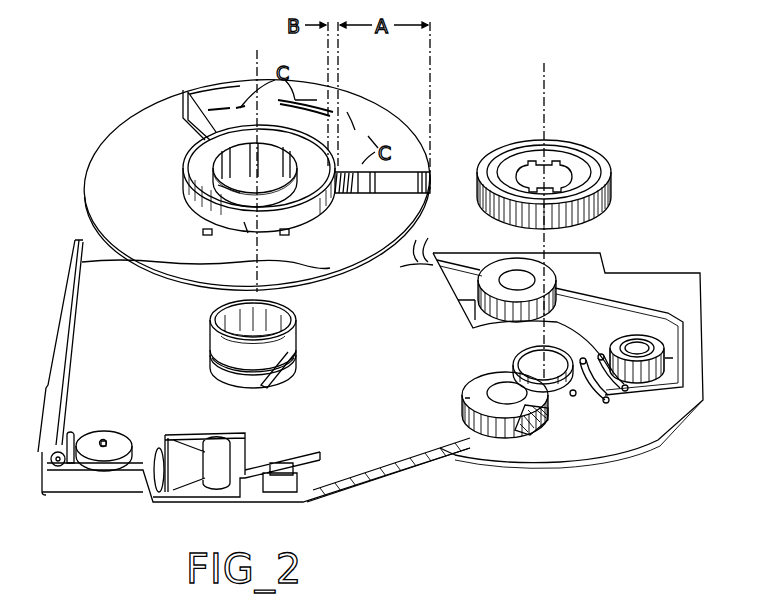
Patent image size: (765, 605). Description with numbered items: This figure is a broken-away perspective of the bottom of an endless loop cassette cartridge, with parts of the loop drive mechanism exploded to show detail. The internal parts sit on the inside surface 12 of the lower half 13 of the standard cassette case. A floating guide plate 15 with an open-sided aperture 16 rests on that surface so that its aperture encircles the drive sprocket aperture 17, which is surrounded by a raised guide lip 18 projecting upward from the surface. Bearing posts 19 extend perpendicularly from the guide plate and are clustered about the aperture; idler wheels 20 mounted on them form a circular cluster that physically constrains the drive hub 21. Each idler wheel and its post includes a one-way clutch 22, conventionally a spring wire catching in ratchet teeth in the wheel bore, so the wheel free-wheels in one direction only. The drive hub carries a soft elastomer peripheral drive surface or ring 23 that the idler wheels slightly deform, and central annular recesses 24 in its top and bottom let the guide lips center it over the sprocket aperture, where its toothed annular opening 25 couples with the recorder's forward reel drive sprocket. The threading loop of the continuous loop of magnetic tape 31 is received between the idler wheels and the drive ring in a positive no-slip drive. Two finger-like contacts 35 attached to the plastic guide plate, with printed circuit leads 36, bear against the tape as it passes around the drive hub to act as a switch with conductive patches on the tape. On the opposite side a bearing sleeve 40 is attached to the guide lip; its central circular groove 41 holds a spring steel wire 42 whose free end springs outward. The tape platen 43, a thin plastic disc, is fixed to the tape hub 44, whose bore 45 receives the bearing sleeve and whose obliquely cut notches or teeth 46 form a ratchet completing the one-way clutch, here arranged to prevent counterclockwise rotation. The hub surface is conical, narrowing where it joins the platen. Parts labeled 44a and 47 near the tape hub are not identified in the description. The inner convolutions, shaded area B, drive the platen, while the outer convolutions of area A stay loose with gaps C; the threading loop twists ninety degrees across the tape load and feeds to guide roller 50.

The inside surface 12 is at (373, 402).
The lower half 13 is at (65, 332).
The floating guide plate 15 is at (688, 300).
The open-sided aperture 16 is at (575, 396).
The drive sprocket aperture 17 is at (548, 357).
The raised guide lip 18 is at (281, 312).
The bearing posts 19 is at (517, 275).
The idler wheels 20 is at (475, 300).
The drive hub 21 is at (561, 166).
The one-way clutch 22 is at (525, 425).
The peripheral drive surface or ring 23 is at (604, 205).
The central annular recesses 24 is at (570, 178).
The toothed annular opening 25 is at (530, 165).
The continuous loop of magnetic tape 31 is at (371, 134).
The finger-like contacts 35 is at (605, 400).
The printed circuit leads 36 is at (595, 293).
The bearing sleeve 40 is at (297, 336).
The central circular groove 41 is at (232, 368).
The spring steel wire 42 is at (268, 388).
The tape platen 43 is at (370, 252).
The tape hub 44 is at (193, 160).
The hub wall 44a is at (248, 233).
The bore 45 is at (212, 176).
The notches or teeth 46 is at (235, 190).
The feet 47 is at (208, 235).
The guide roller 50 is at (118, 440).